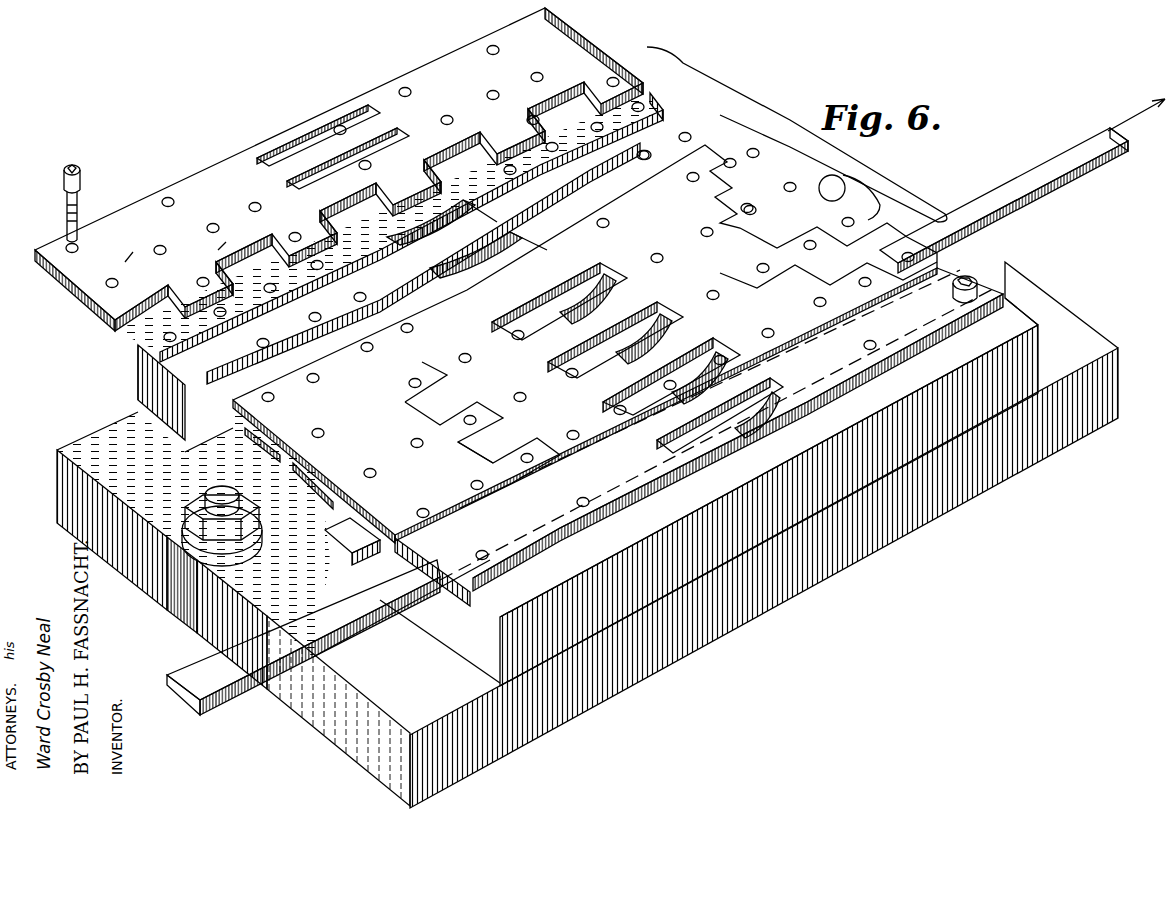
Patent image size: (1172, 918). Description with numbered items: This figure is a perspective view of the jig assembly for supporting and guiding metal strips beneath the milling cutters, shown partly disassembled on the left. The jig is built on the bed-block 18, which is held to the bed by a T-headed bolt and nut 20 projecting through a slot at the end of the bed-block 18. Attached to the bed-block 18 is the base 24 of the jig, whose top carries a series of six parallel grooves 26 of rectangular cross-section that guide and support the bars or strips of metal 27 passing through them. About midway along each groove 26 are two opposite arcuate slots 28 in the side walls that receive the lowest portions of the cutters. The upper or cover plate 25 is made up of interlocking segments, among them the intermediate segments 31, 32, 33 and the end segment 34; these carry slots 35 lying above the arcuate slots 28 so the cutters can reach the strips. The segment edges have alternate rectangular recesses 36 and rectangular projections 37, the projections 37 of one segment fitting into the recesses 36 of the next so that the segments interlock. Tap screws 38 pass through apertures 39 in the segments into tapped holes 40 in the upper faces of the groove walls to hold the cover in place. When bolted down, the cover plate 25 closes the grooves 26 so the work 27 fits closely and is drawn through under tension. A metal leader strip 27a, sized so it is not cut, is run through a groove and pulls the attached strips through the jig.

The bed-block 18 is at (1120, 356).
The T-headed bolt and nut 20 is at (215, 508).
The base of the jig 24 is at (1040, 353).
The upper or cover plate 25 is at (1005, 302).
The grooves 26 is at (212, 405).
The bars or strips of metal 27 is at (192, 668).
The metal leader strip 27a is at (1085, 160).
The arcuate slots 28 is at (430, 225).
The intermediate segment 31 is at (585, 344).
The intermediate segment 32 is at (430, 388).
The intermediate segment 33 is at (485, 444).
The end segment 34 is at (516, 491).
The slots 35 is at (320, 128).
The rectangular recesses 36 is at (88, 280).
The rectangular projections 37 is at (268, 210).
The tap screws 38 is at (80, 167).
The apertures 39 is at (274, 398).
The tapped holes 40 is at (265, 290).